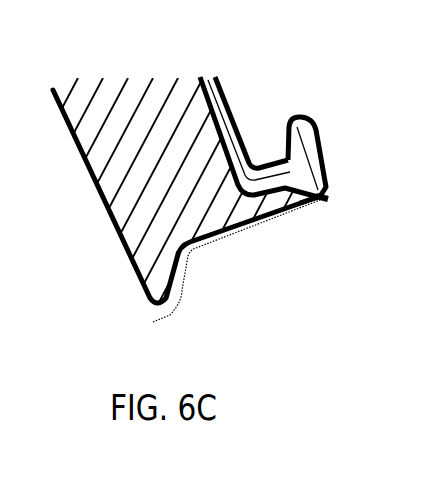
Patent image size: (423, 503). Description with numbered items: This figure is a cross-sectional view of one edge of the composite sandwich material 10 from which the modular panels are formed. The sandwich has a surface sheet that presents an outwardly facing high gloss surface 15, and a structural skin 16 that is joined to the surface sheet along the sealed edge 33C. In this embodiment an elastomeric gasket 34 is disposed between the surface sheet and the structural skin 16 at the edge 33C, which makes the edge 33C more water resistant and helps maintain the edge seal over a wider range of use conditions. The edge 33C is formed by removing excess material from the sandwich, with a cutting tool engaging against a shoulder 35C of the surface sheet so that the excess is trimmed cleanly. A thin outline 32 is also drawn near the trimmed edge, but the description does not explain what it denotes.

The composite sandwich material 10 is at (247, 250).
The high gloss surface 15 is at (238, 130).
The structural skin 16 is at (97, 182).
The outer surface 32 is at (332, 213).
The edge 33C is at (322, 204).
The elastomeric gasket 34 is at (315, 165).
The shoulder 35C is at (327, 197).